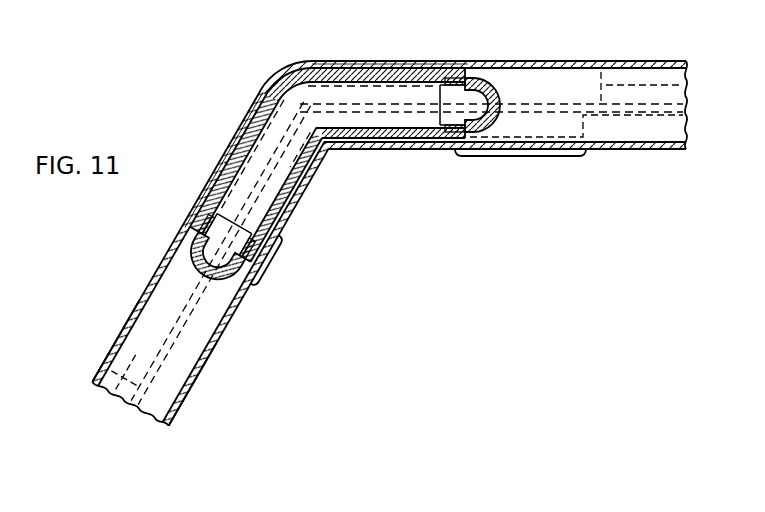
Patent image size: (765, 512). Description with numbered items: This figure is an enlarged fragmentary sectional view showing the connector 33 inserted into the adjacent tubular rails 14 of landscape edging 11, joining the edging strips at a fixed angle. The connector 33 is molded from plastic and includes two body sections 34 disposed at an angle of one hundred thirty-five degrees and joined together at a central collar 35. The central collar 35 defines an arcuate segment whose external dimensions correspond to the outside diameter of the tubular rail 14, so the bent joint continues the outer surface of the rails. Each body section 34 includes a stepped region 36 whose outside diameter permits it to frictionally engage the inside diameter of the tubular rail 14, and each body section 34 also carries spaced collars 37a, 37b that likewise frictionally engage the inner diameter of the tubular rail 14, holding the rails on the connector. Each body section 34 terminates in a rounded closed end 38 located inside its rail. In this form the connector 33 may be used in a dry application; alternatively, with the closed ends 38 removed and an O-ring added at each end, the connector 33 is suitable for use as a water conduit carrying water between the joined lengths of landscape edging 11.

The landscape edging strip 11 is at (568, 63).
The tubular rail 14 is at (625, 63).
The connector 33 is at (252, 72).
The body section 34 is at (394, 64).
The central collar 35 is at (286, 67).
The stepped region 36 is at (348, 65).
The collar 37a is at (430, 80).
The collar 37b is at (462, 68).
The rounded closed end 38 is at (490, 84).